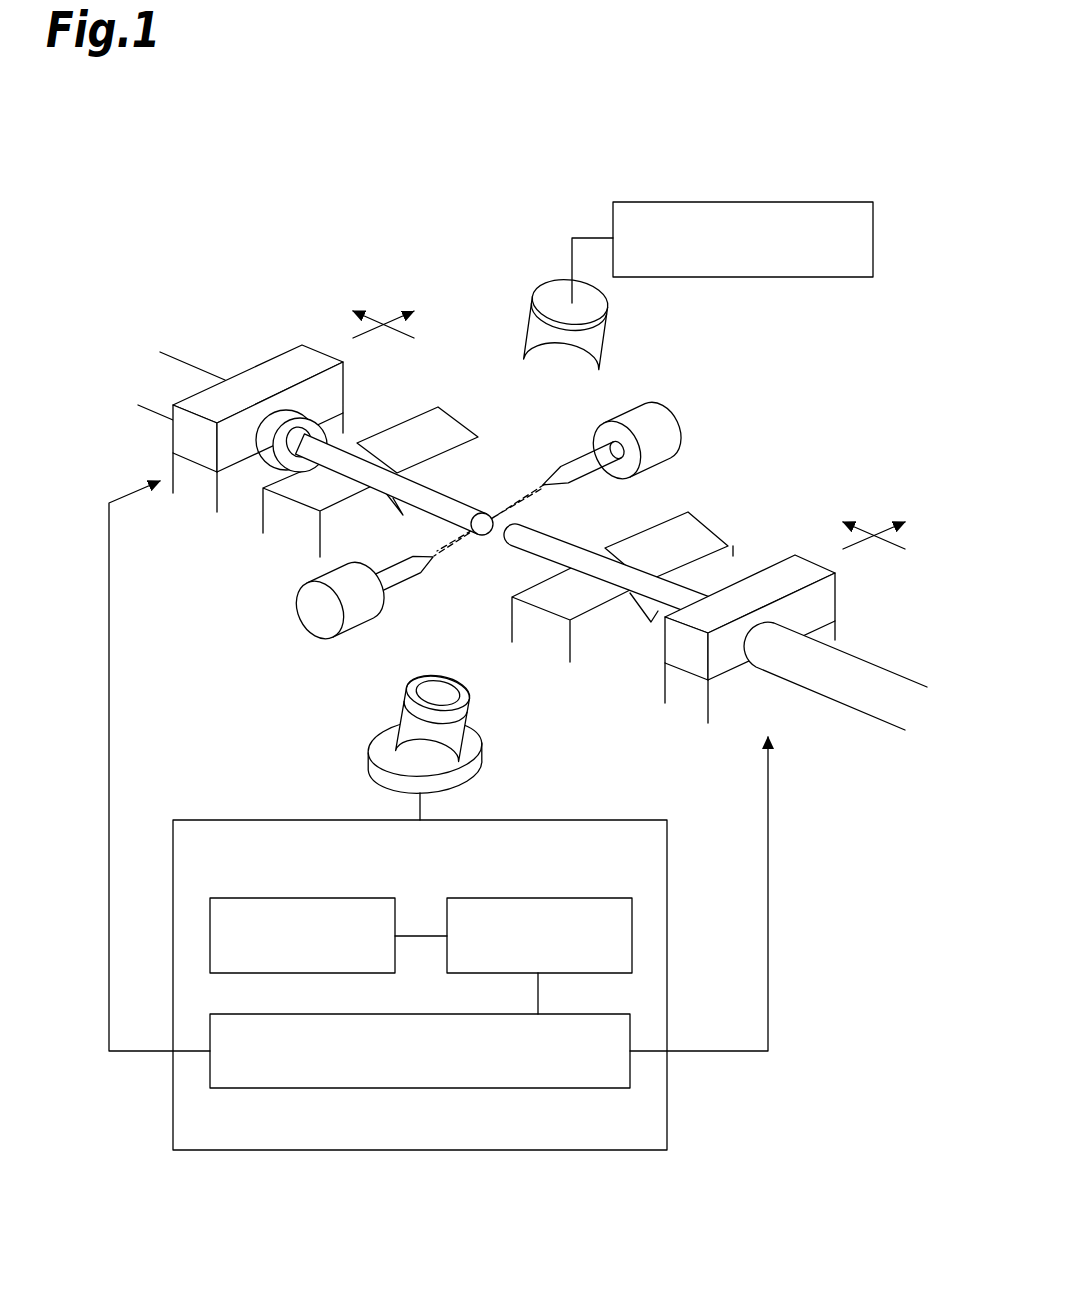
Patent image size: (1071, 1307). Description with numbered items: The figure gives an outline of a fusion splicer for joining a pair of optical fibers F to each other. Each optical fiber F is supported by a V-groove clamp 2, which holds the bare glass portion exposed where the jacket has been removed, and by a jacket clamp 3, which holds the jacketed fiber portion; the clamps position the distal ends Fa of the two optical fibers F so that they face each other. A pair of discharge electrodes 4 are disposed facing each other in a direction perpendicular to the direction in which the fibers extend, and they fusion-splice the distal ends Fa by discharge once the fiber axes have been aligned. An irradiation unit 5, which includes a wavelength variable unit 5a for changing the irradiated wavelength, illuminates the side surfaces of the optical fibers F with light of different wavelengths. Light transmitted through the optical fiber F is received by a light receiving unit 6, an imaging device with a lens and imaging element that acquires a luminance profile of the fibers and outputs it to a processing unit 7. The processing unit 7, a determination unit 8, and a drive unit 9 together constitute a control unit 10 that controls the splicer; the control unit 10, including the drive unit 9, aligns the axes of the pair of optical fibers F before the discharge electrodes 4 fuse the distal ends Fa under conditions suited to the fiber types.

The V-groove clamp 2 is at (425, 430).
The jacket clamp 3 is at (282, 362).
The discharge electrode 4 is at (308, 622).
The irradiation unit 5 is at (553, 290).
The wavelength variable unit 5a is at (740, 201).
The light receiving unit 6 is at (487, 757).
The processing unit 7 is at (298, 898).
The determination unit 8 is at (537, 898).
The drive unit 9 is at (422, 1088).
The control unit 10 is at (623, 820).
The optical fiber F is at (482, 495).
The distal end Fa is at (477, 510).